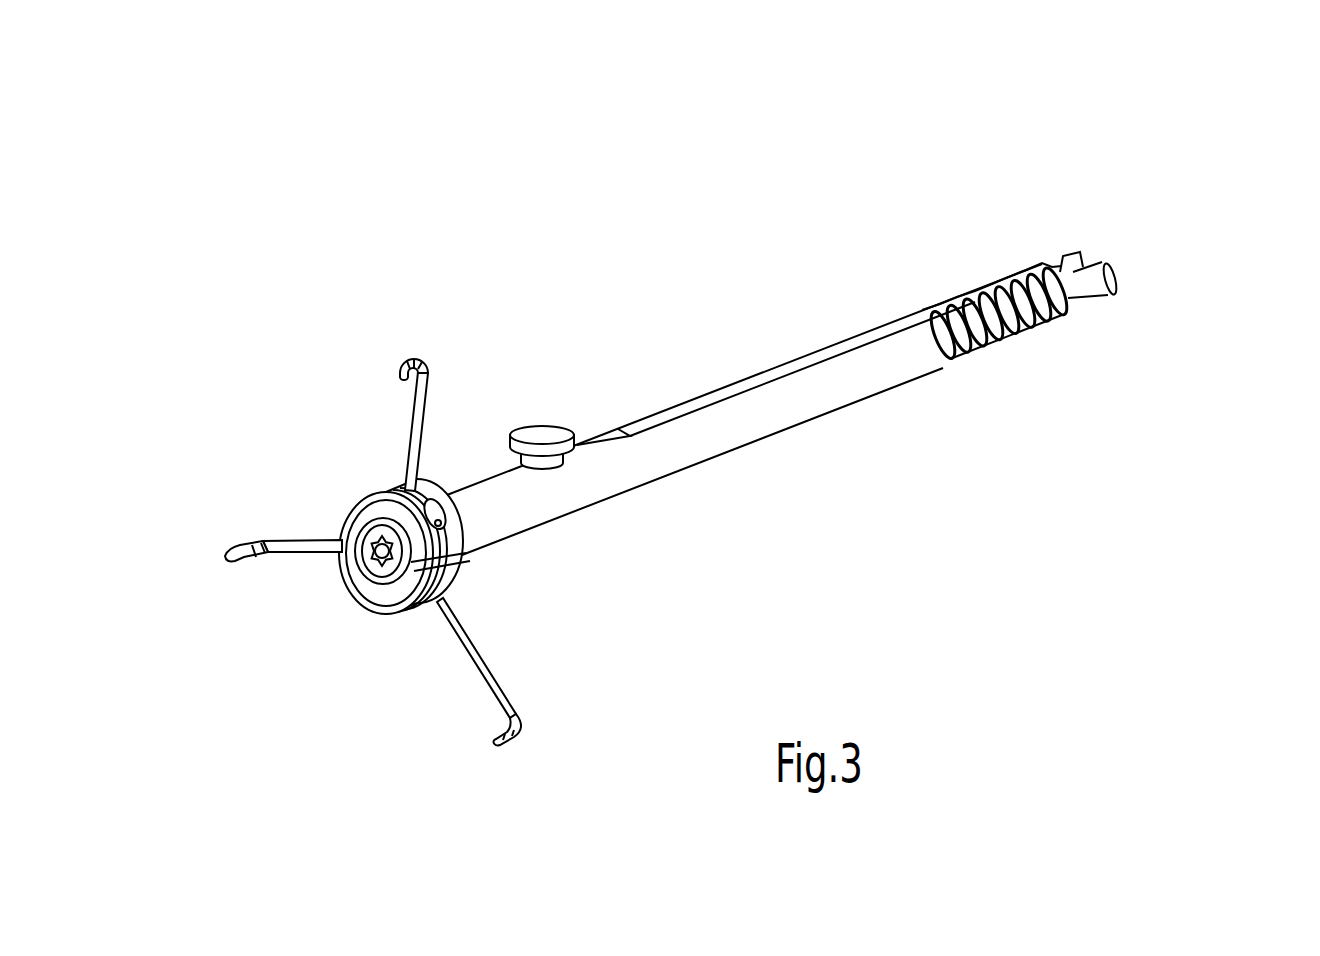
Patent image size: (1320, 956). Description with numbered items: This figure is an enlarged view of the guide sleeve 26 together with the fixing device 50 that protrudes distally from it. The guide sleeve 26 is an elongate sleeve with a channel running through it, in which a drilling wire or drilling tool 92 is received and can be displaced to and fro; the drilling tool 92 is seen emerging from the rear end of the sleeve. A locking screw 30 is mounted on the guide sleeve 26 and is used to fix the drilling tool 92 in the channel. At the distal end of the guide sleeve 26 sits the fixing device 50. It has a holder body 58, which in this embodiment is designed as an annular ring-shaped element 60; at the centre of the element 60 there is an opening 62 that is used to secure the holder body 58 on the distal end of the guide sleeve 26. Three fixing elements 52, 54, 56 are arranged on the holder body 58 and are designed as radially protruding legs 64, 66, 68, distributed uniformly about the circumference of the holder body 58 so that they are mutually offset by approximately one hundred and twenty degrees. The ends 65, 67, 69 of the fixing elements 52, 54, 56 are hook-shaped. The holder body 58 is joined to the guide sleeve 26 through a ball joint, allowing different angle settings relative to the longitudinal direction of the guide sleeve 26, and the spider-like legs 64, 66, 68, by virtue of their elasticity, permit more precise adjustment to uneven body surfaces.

The fixing device 50 is at (252, 250).
The guide sleeve 26 is at (783, 402).
The locking screw 30 is at (547, 437).
The drilling tool 92 is at (1117, 283).
The fixing element 54 is at (467, 335).
The leg 66 is at (419, 445).
The end 67 is at (415, 358).
The fixing element 52 is at (548, 679).
The leg 64 is at (493, 680).
The end 65 is at (525, 734).
The fixing element 56 is at (244, 534).
The leg 68 is at (312, 538).
The end 69 is at (243, 563).
The annular ring-shaped element 60 is at (357, 568).
The holder body 58 is at (378, 606).
The opening 62 is at (382, 562).